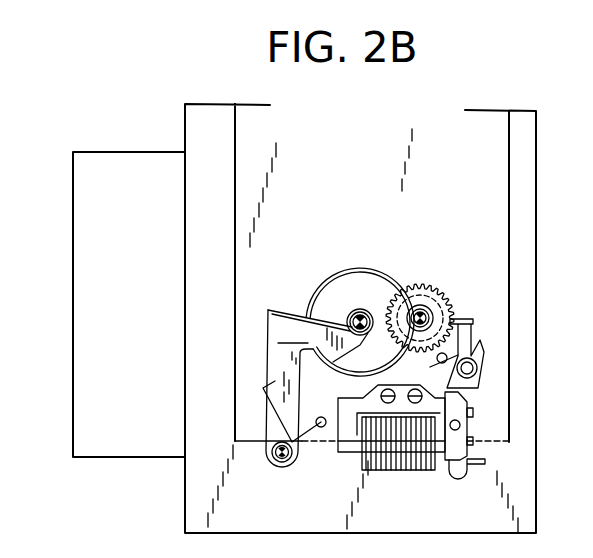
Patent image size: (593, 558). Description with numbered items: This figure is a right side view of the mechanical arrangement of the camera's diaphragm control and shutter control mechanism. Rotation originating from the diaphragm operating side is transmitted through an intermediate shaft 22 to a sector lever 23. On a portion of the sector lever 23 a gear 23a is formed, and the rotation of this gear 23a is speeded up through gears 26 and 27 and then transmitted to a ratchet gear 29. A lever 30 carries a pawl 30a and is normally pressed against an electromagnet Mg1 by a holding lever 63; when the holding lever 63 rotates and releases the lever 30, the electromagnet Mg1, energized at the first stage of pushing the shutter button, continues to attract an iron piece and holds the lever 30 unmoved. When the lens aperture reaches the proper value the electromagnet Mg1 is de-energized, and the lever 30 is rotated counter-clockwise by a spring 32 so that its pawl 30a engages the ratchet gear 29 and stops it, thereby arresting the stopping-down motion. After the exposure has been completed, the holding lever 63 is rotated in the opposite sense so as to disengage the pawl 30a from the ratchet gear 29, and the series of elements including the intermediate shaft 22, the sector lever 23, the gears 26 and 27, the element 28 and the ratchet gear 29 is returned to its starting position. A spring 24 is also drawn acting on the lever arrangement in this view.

The intermediate shaft 22 is at (283, 464).
The sector lever 23 is at (317, 388).
The gear 23a is at (292, 309).
The spring 24 is at (278, 439).
The gear 26 is at (362, 308).
The gear 27 is at (383, 270).
The element of the return system 28 is at (412, 304).
The ratchet gear 29 is at (430, 286).
The lever 30 is at (465, 393).
The pawl 30a is at (460, 319).
The spring 32 is at (483, 346).
The holding lever 63 is at (473, 466).
The electromagnet Mg1 is at (400, 460).